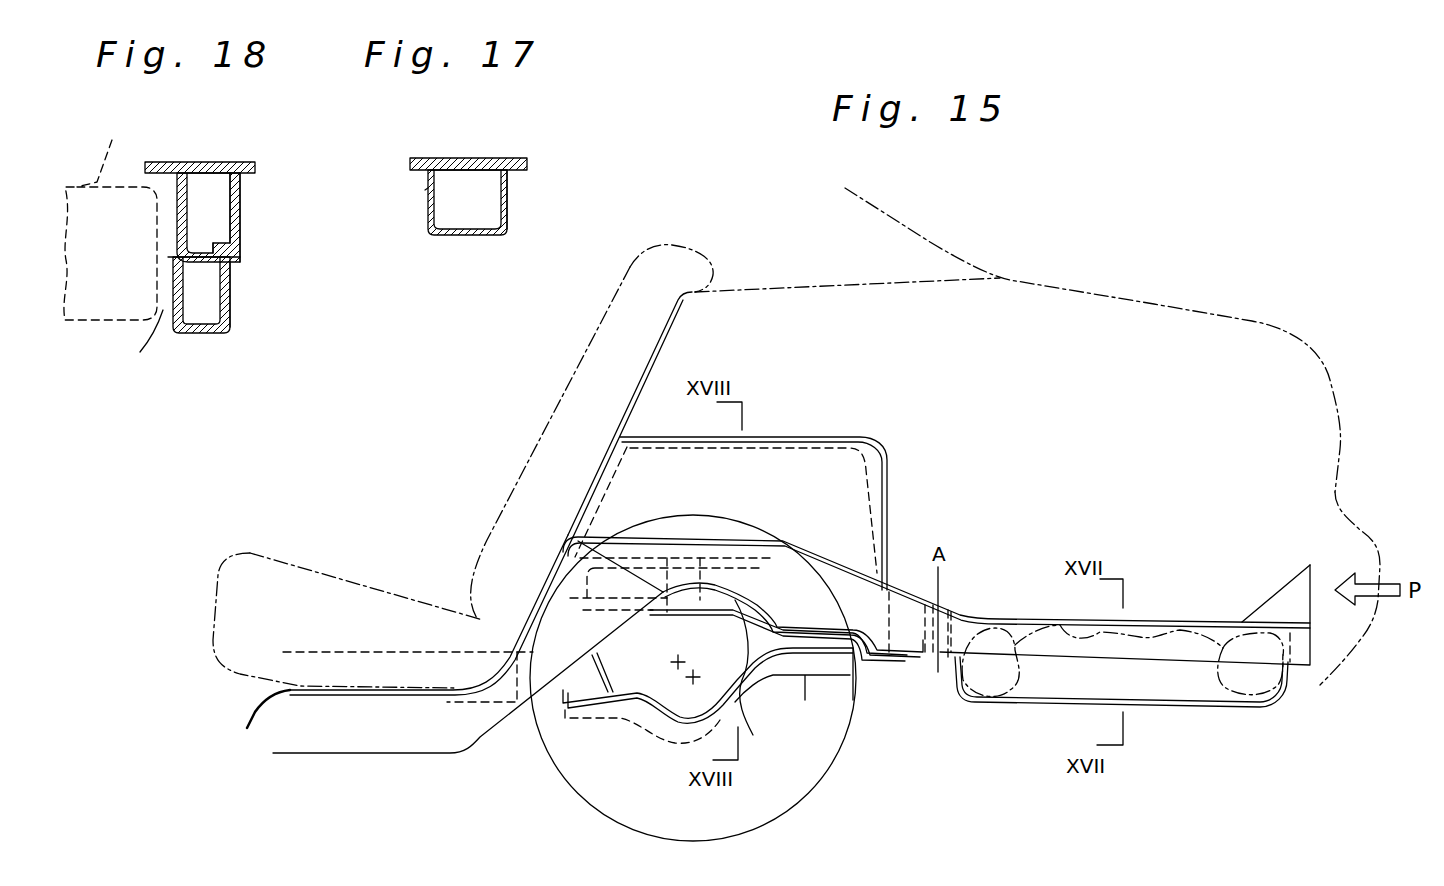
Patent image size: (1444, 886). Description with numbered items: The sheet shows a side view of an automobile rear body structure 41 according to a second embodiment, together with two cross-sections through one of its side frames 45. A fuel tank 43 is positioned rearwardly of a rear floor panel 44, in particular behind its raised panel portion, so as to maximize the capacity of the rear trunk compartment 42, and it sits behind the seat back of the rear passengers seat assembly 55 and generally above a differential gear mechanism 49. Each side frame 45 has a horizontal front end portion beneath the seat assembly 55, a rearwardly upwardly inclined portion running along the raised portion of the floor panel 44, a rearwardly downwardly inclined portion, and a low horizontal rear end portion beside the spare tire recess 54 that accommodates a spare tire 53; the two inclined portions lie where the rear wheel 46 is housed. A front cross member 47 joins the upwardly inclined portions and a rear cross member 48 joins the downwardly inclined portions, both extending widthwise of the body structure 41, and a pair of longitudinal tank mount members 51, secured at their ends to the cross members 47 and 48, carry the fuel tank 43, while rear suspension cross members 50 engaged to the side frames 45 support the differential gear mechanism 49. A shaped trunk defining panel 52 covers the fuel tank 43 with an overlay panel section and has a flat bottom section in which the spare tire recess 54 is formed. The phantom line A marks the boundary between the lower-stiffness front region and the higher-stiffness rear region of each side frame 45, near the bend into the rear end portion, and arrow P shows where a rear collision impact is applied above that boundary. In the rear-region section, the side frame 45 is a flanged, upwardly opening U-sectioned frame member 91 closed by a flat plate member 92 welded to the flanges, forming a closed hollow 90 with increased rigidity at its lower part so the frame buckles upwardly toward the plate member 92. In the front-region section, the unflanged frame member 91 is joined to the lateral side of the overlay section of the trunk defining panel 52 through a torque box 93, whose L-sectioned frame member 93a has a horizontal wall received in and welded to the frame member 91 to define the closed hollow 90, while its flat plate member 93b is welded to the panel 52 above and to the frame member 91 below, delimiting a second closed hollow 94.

In FIG. 15, the automobile rear body structure 41 is at (1097, 293).
In FIG. 15, the rear trunk compartment 42 is at (1213, 548).
In FIG. 18, the fuel tank 43 is at (110, 218).
In FIG. 15, the fuel tank 43 is at (889, 472).
In FIG. 15, the rear floor panel 44 is at (653, 357).
In FIG. 18, the side frame 45 is at (141, 355).
In FIG. 17, the side frame 45 is at (425, 191).
In FIG. 15, the side frame 45 is at (483, 730).
In FIG. 15, the rear wheel 46 is at (835, 766).
In FIG. 15, the front cross member 47 is at (533, 590).
In FIG. 15, the rear cross member 48 is at (913, 663).
In FIG. 15, the differential gear mechanism 49 is at (743, 653).
In FIG. 15, the rear suspension cross member 50 is at (787, 677).
In FIG. 15, the tank mount member 51 is at (669, 735).
In FIG. 18, the trunk defining panel 52 is at (213, 163).
In FIG. 15, the trunk defining panel 52 is at (890, 533).
In FIG. 15, the spare tire 53 is at (1028, 635).
In FIG. 15, the spare tire recess 54 is at (1117, 690).
In FIG. 15, the rear passengers seat assembly 55 is at (523, 467).
In FIG. 18, the closed hollow 90 is at (204, 295).
In FIG. 17, the closed hollow 90 is at (467, 202).
In FIG. 18, the U-sectioned frame member 91 is at (233, 298).
In FIG. 17, the U-sectioned frame member 91 is at (509, 216).
In FIG. 17, the flat plate member 92 is at (481, 158).
In FIG. 18, the torque box 93 is at (241, 228).
In FIG. 15, the torque box 93 is at (870, 462).
In FIG. 18, the L-sectioned frame member 93a is at (174, 235).
In FIG. 18, the flat plate member 93b is at (242, 201).
In FIG. 18, the closed hollow 94 is at (208, 217).